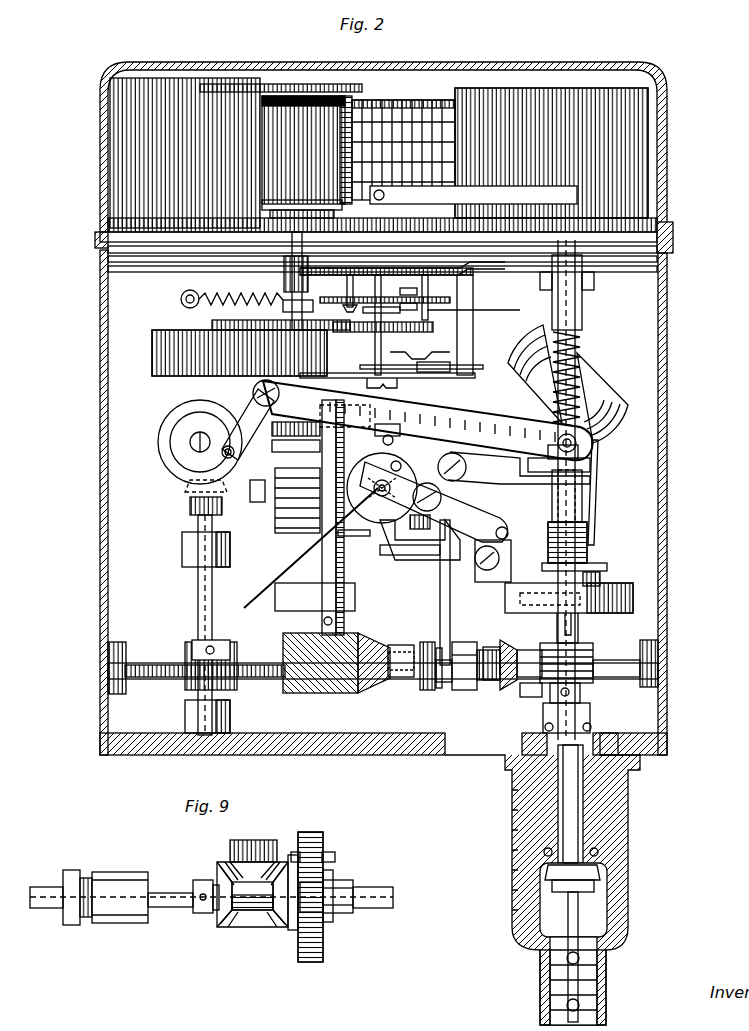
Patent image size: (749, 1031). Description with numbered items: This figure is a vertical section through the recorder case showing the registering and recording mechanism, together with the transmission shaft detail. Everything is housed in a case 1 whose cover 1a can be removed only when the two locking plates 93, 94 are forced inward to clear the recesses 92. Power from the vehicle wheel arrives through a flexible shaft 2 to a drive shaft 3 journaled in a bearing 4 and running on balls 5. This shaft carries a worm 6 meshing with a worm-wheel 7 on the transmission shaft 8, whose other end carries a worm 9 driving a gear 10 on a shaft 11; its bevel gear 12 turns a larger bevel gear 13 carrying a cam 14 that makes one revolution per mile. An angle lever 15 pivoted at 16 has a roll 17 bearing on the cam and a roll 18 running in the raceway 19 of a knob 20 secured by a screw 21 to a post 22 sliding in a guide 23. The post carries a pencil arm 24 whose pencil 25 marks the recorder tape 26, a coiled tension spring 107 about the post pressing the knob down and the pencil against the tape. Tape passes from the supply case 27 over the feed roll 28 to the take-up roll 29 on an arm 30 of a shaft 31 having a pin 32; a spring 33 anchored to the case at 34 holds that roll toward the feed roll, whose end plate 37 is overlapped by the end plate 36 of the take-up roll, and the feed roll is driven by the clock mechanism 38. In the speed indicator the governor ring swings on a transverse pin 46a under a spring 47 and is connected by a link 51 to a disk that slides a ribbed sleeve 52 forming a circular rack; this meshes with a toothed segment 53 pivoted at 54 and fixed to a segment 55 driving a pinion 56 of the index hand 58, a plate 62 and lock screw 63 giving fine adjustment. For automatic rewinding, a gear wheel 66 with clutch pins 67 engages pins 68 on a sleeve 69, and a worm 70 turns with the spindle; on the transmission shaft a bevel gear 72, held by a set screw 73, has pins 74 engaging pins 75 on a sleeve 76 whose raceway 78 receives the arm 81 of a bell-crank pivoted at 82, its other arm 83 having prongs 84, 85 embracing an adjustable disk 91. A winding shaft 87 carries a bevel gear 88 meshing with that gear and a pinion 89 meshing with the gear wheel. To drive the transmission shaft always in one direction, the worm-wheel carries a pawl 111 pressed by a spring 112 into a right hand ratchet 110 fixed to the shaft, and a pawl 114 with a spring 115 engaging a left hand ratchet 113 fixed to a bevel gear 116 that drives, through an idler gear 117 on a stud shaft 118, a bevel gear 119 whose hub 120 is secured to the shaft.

In FIG. 2, the case 1 is at (658, 547).
In FIG. 2, the cover 1a is at (668, 170).
In FIG. 2, the flexible shaft 2 is at (540, 1016).
In FIG. 2, the drive shaft 3 is at (563, 800).
In FIG. 2, the bearing 4 is at (628, 785).
In FIG. 2, the balls 5 is at (543, 720).
In FIG. 2, the worm 6 is at (593, 652).
In FIG. 9, the worm-wheel 7 is at (323, 837).
In FIG. 2, the transmission shaft 8 is at (624, 677).
In FIG. 9, the transmission shaft 8 is at (390, 909).
In FIG. 2, the worm 9 is at (237, 661).
In FIG. 2, the gear 10 is at (174, 652).
In FIG. 2, the shaft 11 is at (198, 610).
In FIG. 2, the bevel gear 12 is at (190, 505).
In FIG. 2, the larger bevel gear 13 is at (168, 466).
In FIG. 2, the cam 14 is at (160, 446).
In FIG. 2, the angle lever 15 is at (470, 418).
In FIG. 2, the pivot 16 is at (256, 386).
In FIG. 2, the roll 17 is at (245, 458).
In FIG. 2, the roll 18 is at (590, 445).
In FIG. 2, the annular groove 19 is at (592, 462).
In FIG. 2, the knob 20 is at (592, 470).
In FIG. 2, the screw 21 is at (520, 470).
In FIG. 2, the post 22 is at (580, 335).
In FIG. 2, the guide 23 is at (583, 310).
In FIG. 2, the pencil arm 24 is at (555, 205).
In FIG. 2, the pencil 25 is at (385, 195).
In FIG. 2, the recorder tape 26 is at (362, 118).
In FIG. 2, the supply case 27 is at (535, 90).
In FIG. 2, the feed roll 28 is at (425, 95).
In FIG. 2, the take-up roll 29 is at (266, 208).
In FIG. 2, the arm 30 is at (262, 212).
In FIG. 2, the shaft 31 is at (302, 300).
In FIG. 2, the projecting pin 32 is at (306, 311).
In FIG. 2, the spring 33 is at (244, 298).
In FIG. 2, the case attachment point 34 is at (181, 301).
In FIG. 2, the end plate 36 is at (362, 80).
In FIG. 2, the end plate 37 is at (445, 93).
In FIG. 2, the clock mechanism 38 is at (385, 327).
In FIG. 2, the transverse pin 46a is at (586, 378).
In FIG. 2, the spring 47 is at (582, 360).
In FIG. 2, the link 51 is at (596, 505).
In FIG. 2, the transversely ribbed sleeve 52 is at (588, 537).
In FIG. 2, the toothed segment 53 is at (486, 582).
In FIG. 2, the pivot 54 is at (509, 534).
In FIG. 2, the toothed segment 55 is at (467, 468).
In FIG. 2, the pinion 56 is at (380, 488).
In FIG. 2, the index hand 58 is at (290, 578).
In FIG. 2, the plate 62 is at (402, 491).
In FIG. 2, the lock screw 63 is at (441, 500).
In FIG. 2, the gear wheel 66 is at (290, 420).
In FIG. 2, the pins 67 is at (234, 445).
In FIG. 2, the pins 68 is at (280, 452).
In FIG. 2, the sleeve 69 is at (246, 497).
In FIG. 2, the worm 70 is at (275, 525).
In FIG. 2, the bevel gear 72 is at (398, 650).
In FIG. 2, the set screw 73 is at (420, 656).
In FIG. 2, the pins 74 is at (380, 692).
In FIG. 2, the pins 75 is at (440, 685).
In FIG. 9, the pins 75 is at (68, 873).
In FIG. 2, the sleeve 76 is at (464, 656).
In FIG. 9, the sleeve 76 is at (115, 872).
In FIG. 2, the raceway 78 is at (447, 690).
In FIG. 9, the raceway 78 is at (86, 918).
In FIG. 2, the arm 81 is at (483, 646).
In FIG. 2, the pivot 82 is at (440, 545).
In FIG. 2, the arm 83 is at (420, 547).
In FIG. 2, the prong 84 is at (400, 558).
In FIG. 2, the prong 85 is at (410, 530).
In FIG. 2, the winding shaft 87 is at (322, 553).
In FIG. 2, the bevel gear 88 is at (355, 600).
In FIG. 2, the pinion 89 is at (375, 431).
In FIG. 2, the adjustable disk 91 is at (356, 540).
In FIG. 2, the recesses 92 is at (674, 226).
In FIG. 2, the locking plate 93 is at (100, 244).
In FIG. 2, the locking plate 94 is at (674, 250).
In FIG. 2, the coiled tension spring 107 is at (556, 412).
In FIG. 2, the right hand ratchet 110 is at (548, 645).
In FIG. 9, the right hand ratchet 110 is at (345, 880).
In FIG. 2, the pawl 111 is at (578, 630).
In FIG. 9, the pawl 111 is at (336, 857).
In FIG. 2, the spring 112 is at (585, 618).
In FIG. 9, the spring 112 is at (328, 936).
In FIG. 9, the left hand ratchet 113 is at (290, 928).
In FIG. 9, the pawl 114 is at (296, 850).
In FIG. 9, the spring 115 is at (310, 940).
In FIG. 2, the bevel gear 116 is at (620, 412).
In FIG. 9, the bevel gear 116 is at (262, 910).
In FIG. 9, the idler gear 117 is at (226, 868).
In FIG. 2, the stud shaft 118 is at (595, 567).
In FIG. 9, the stud shaft 118 is at (258, 836).
In FIG. 2, the bevel gear 119 is at (510, 646).
In FIG. 9, the bevel gear 119 is at (222, 920).
In FIG. 2, the hub 120 is at (492, 682).
In FIG. 9, the hub 120 is at (200, 914).